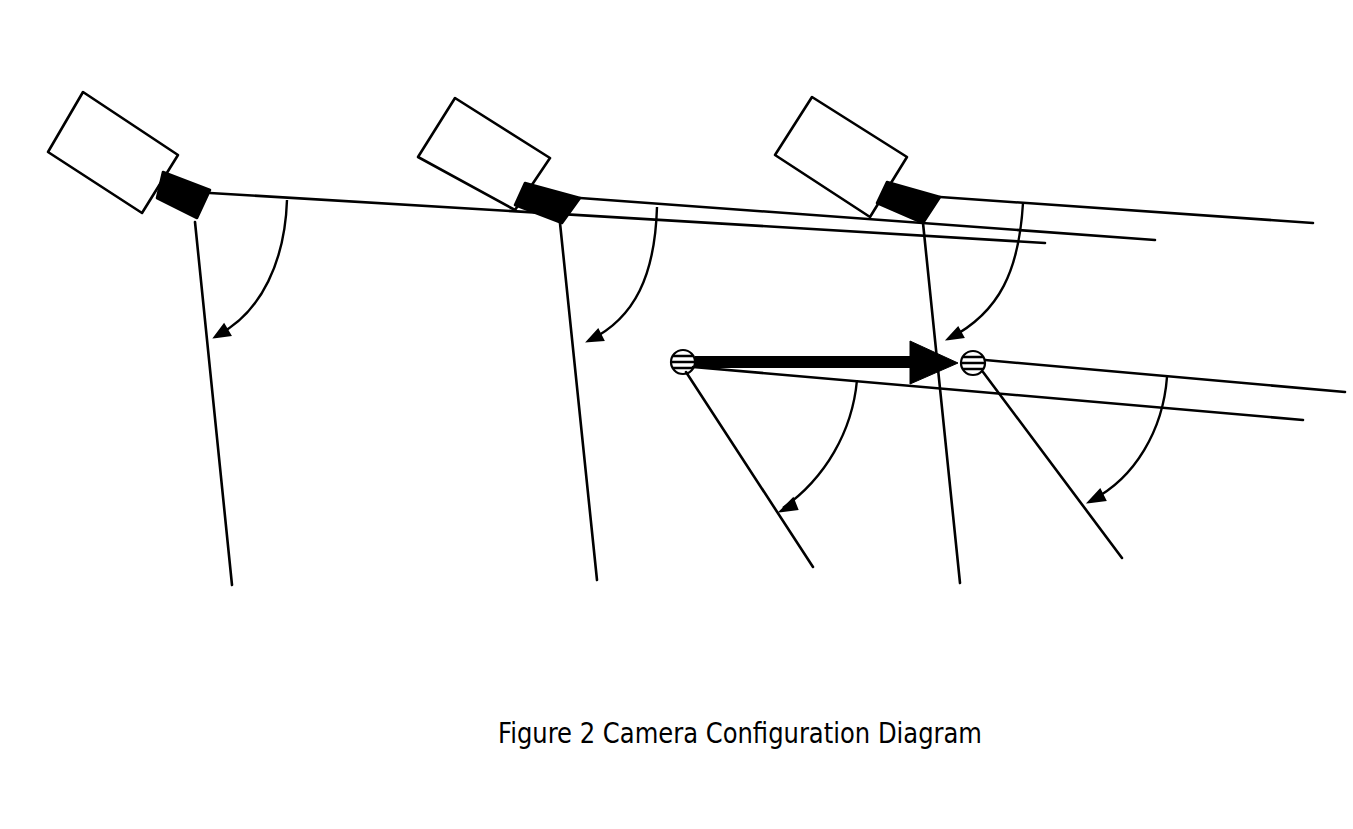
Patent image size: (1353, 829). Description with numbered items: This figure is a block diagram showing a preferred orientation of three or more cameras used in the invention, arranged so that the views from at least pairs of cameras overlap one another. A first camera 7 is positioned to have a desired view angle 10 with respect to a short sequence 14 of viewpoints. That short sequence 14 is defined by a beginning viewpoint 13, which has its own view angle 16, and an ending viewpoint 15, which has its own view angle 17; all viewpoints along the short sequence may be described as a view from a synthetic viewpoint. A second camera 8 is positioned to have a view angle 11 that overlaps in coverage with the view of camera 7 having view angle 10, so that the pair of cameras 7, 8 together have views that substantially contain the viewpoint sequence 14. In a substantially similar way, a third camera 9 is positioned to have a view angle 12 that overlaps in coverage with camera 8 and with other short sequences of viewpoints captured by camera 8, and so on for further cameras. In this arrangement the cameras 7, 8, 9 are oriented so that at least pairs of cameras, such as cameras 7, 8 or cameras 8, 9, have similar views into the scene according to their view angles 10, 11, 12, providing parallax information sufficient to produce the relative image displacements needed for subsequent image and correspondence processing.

The camera 7 is at (137, 138).
The camera 8 is at (511, 150).
The camera 9 is at (869, 148).
The view angle 10 is at (277, 280).
The view angle 11 is at (670, 274).
The view angle 12 is at (1028, 271).
The beginning viewpoint 13 is at (683, 350).
The short sequence of viewpoints 14 is at (826, 344).
The ending viewpoint 15 is at (1028, 338).
The view angle 16 is at (857, 445).
The view angle 17 is at (1161, 439).